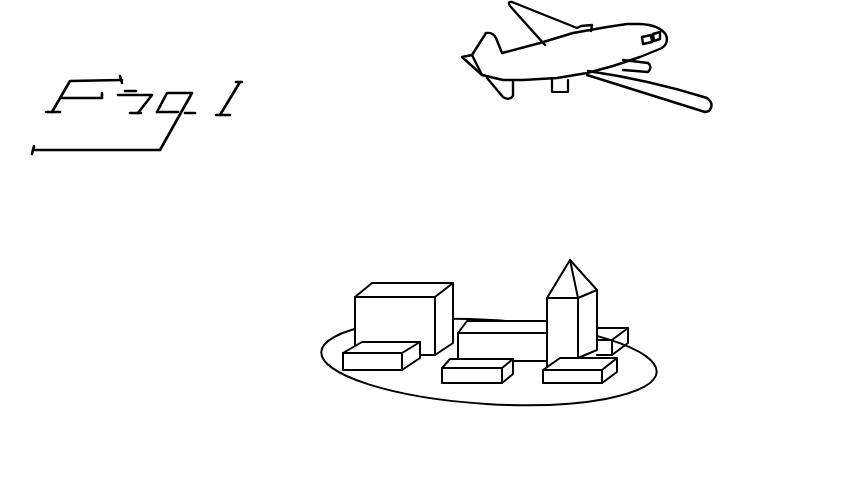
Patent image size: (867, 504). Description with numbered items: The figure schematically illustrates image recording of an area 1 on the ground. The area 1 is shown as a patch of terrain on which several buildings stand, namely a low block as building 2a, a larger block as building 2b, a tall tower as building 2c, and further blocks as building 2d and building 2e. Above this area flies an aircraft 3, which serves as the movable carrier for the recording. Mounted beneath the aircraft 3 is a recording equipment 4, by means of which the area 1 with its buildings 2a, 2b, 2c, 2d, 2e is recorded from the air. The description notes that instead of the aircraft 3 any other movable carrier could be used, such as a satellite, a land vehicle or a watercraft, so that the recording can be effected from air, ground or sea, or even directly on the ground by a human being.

The area 1 is at (527, 390).
The building 2a is at (357, 364).
The building 2b is at (449, 301).
The building 2c is at (590, 307).
The building 2d is at (625, 340).
The building 2e is at (600, 380).
The aircraft 3 is at (615, 78).
The recording equipment 4 is at (558, 86).